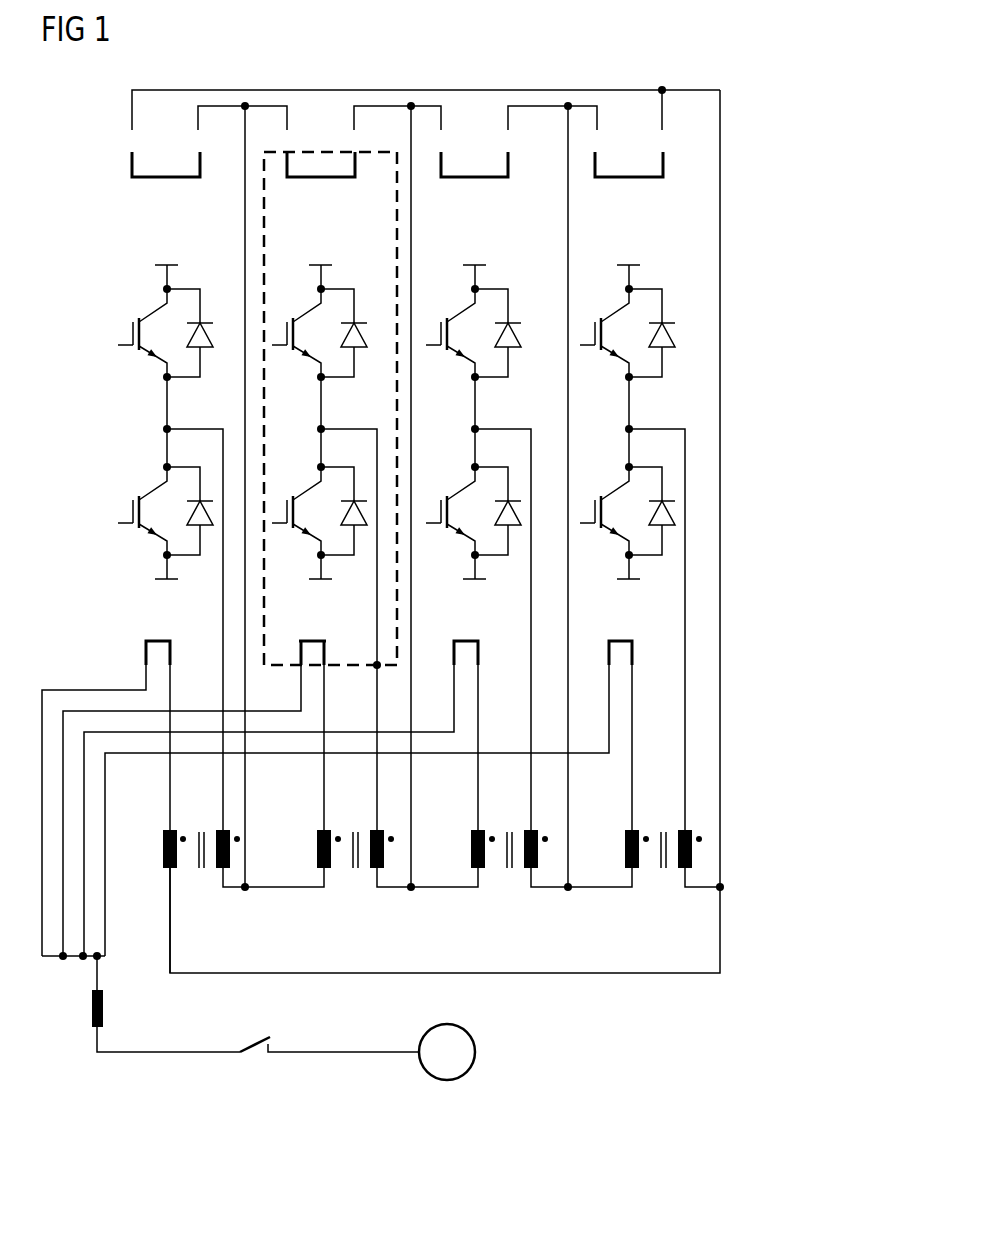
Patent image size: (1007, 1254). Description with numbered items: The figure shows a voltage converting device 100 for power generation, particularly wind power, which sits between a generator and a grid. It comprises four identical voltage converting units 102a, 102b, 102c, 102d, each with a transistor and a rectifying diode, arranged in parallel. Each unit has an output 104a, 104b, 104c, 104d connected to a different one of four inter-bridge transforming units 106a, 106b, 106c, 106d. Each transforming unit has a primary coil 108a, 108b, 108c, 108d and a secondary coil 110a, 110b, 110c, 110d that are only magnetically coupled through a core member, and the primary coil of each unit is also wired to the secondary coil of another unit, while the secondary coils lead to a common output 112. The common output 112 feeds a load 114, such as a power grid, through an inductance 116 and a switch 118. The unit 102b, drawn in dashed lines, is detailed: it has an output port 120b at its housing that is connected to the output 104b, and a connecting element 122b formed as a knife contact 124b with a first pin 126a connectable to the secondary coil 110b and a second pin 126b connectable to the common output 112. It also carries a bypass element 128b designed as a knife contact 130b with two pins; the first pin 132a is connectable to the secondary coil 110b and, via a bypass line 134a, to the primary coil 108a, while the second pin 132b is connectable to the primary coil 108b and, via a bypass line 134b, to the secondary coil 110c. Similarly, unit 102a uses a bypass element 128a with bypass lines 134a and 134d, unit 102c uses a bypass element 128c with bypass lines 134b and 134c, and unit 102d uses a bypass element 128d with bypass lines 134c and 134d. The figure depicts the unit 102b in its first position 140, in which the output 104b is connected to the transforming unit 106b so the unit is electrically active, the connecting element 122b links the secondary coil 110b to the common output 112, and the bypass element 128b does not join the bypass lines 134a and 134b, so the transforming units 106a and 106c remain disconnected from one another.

The voltage converting device 100 is at (731, 129).
The first position 140 is at (484, 531).
The voltage converting unit 102a is at (153, 256).
The voltage converting unit 102b is at (344, 256).
The voltage converting unit 102c is at (505, 256).
The voltage converting unit 102d is at (659, 256).
The output 104a is at (167, 429).
The output 104b is at (321, 429).
The output 104c is at (475, 429).
The output 104d is at (629, 429).
The inter-bridge transforming unit 106a is at (201, 884).
The inter-bridge transforming unit 106b is at (355, 884).
The inter-bridge transforming unit 106c is at (509, 884).
The inter-bridge transforming unit 106d is at (663, 884).
The primary coil 108a is at (217, 831).
The primary coil 108b is at (371, 831).
The primary coil 108c is at (525, 831).
The primary coil 108d is at (679, 831).
The secondary coil 110a is at (163, 831).
The secondary coil 110b is at (317, 831).
The secondary coil 110c is at (471, 831).
The secondary coil 110d is at (625, 831).
The common output 112 is at (52, 959).
The load 114 is at (475, 1053).
The inductance 116 is at (104, 1009).
The switch 118 is at (257, 1040).
The output port 120b is at (377, 666).
The connecting element 122b is at (217, 771).
The knife contact 124b is at (312, 641).
The first pin 126a is at (300, 660).
The second pin 126b is at (347, 714).
The bypass element 128a is at (168, 160).
The bypass element 128b is at (326, 139).
The bypass element 128c is at (472, 160).
The bypass element 128d is at (626, 160).
The knife contact 130b is at (320, 178).
The first pin 132a is at (283, 164).
The second pin 132b is at (357, 164).
The bypass line 134a is at (243, 229).
The bypass line 134b is at (412, 612).
The bypass line 134c is at (574, 612).
The bypass line 134d is at (722, 612).